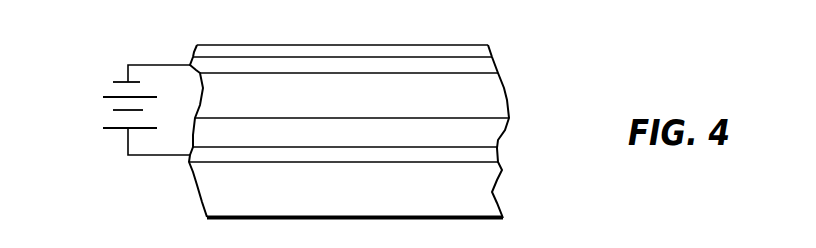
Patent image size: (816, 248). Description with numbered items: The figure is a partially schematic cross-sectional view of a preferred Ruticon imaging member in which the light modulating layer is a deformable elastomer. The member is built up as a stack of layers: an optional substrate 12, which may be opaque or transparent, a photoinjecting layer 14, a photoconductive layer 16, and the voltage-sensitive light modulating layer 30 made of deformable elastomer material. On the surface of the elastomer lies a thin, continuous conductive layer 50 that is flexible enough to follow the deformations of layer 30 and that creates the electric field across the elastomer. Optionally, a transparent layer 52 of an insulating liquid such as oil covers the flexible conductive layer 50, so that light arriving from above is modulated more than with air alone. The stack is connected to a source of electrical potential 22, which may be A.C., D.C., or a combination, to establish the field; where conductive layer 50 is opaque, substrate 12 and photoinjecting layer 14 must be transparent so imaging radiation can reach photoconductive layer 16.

The substrate 12 is at (485, 198).
The photoinjecting layer 14 is at (482, 159).
The photoconductive layer 16 is at (493, 142).
The light modulating layer 30 is at (501, 103).
The conductive layer 50 is at (492, 71).
The transparent layer of insulating liquid 52 is at (483, 52).
The source of electrical potential 22 is at (110, 95).